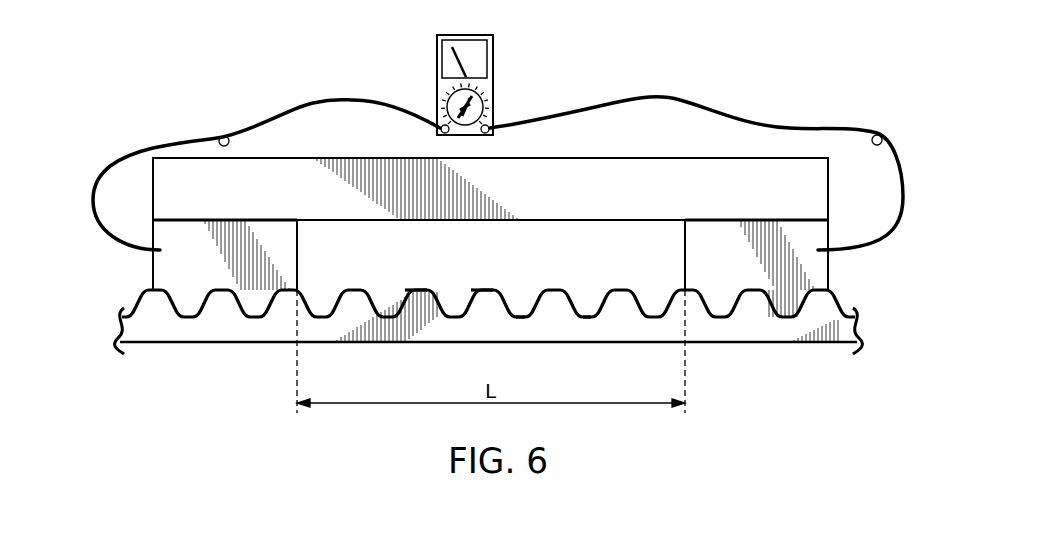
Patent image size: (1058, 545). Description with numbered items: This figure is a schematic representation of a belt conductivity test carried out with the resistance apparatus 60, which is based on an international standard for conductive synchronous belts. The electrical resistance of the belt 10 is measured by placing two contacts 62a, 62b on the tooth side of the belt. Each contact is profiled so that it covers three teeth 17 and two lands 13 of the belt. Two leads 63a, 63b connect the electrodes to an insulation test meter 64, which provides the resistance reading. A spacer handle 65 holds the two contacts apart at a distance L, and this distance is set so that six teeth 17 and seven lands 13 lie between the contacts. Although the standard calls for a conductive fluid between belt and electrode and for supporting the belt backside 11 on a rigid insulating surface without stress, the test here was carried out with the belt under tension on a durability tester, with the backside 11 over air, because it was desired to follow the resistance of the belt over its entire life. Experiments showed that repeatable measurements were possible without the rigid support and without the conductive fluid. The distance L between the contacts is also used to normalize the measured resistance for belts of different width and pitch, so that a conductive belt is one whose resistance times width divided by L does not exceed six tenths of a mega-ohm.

The belt 10 is at (812, 330).
The belt backside 11 is at (245, 343).
The lands 13 is at (590, 317).
The teeth 17 is at (490, 290).
The resistance apparatus 60 is at (755, 96).
The contact 62a is at (820, 266).
The contact 62b is at (163, 270).
The lead 63a is at (880, 134).
The lead 63b is at (223, 137).
The insulation test meter 64 is at (487, 89).
The spacer handle 65 is at (605, 176).